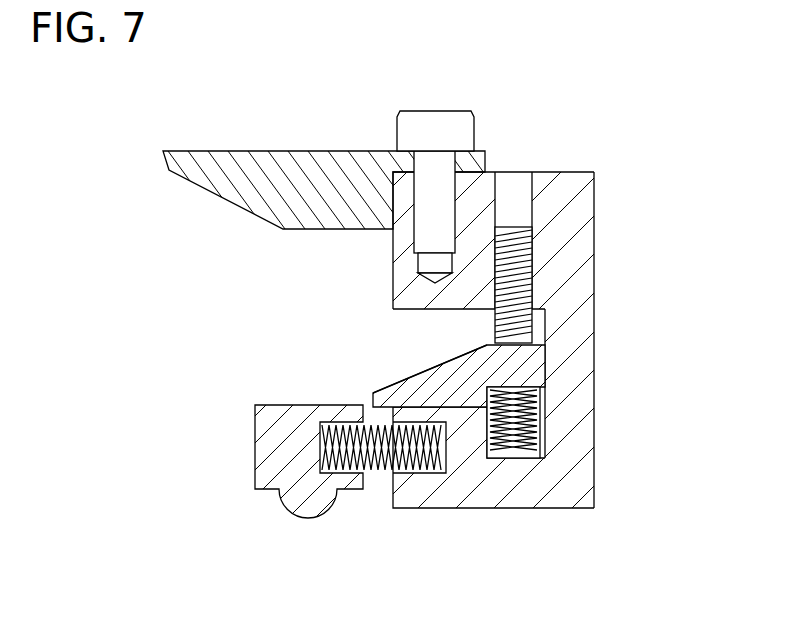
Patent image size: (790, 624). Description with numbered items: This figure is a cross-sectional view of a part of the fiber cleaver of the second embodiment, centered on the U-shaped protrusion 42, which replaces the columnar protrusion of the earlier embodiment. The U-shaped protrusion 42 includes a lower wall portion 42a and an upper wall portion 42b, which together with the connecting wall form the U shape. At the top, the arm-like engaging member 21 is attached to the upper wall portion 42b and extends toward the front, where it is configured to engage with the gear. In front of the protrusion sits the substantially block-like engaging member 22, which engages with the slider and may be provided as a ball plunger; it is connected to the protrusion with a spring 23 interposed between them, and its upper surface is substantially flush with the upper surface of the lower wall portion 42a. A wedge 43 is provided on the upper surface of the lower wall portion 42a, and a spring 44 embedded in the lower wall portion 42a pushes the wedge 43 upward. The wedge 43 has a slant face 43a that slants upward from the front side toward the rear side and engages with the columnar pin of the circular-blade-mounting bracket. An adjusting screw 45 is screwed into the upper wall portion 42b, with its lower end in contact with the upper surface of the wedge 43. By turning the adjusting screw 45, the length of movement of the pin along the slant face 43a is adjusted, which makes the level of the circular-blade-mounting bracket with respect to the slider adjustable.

The engaging member 21 is at (302, 167).
The engaging member 22 is at (255, 455).
The spring 23 is at (377, 470).
The U-shaped protrusion 42 is at (411, 338).
The lower wall portion 42a is at (485, 498).
The upper wall portion 42b is at (570, 185).
The wedge 43 is at (491, 367).
The slant face 43a is at (410, 373).
The spring 44 is at (527, 435).
The adjusting screw 45 is at (520, 267).